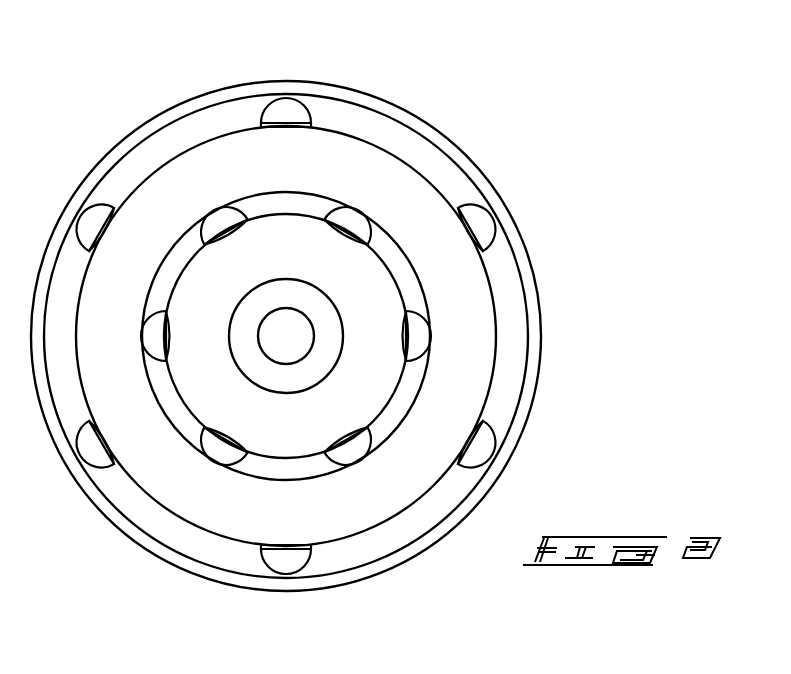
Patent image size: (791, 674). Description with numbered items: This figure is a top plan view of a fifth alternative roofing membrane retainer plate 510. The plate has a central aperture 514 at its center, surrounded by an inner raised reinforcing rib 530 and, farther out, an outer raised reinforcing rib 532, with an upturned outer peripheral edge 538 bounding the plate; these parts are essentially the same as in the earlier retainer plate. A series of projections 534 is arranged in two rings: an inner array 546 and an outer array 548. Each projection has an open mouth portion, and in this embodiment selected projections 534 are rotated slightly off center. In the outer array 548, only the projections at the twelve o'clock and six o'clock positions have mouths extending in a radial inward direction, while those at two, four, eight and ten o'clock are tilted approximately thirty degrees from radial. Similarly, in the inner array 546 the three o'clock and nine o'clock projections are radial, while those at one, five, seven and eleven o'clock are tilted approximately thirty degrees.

The roofing membrane retainer plate 510 is at (83, 119).
The central aperture 514 is at (304, 322).
The inner raised reinforcing rib 530 is at (230, 302).
The outer raised reinforcing rib 532 is at (162, 236).
The projections 534 is at (289, 104).
The upturned outer peripheral edge 538 is at (120, 517).
The inner array 546 is at (378, 201).
The outer array 548 is at (513, 200).